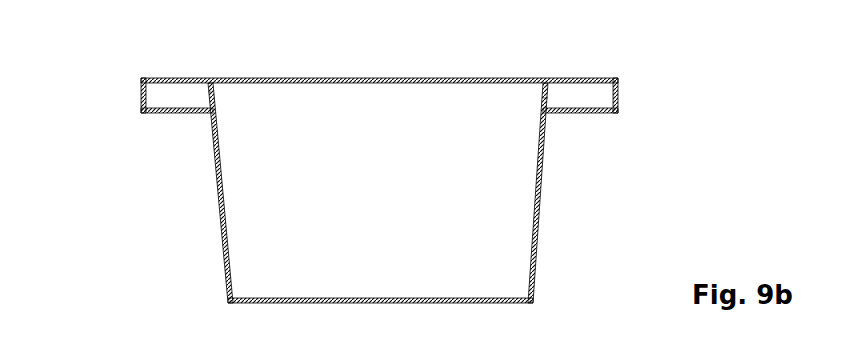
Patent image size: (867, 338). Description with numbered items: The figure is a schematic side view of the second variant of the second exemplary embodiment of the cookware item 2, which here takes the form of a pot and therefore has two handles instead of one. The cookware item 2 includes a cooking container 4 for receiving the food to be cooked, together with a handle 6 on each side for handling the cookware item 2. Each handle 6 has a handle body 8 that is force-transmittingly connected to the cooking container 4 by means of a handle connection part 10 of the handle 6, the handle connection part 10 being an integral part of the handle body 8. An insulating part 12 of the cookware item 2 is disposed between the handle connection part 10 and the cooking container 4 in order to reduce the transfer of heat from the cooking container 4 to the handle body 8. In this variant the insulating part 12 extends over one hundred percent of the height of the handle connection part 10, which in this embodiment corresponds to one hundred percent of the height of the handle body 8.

The cookware item 2 is at (380, 162).
The cooking container 4 is at (297, 216).
The handle 6 is at (138, 92).
The handle body 8 is at (150, 106).
The handle connection part 10 is at (202, 122).
The insulating part 12 is at (208, 93).